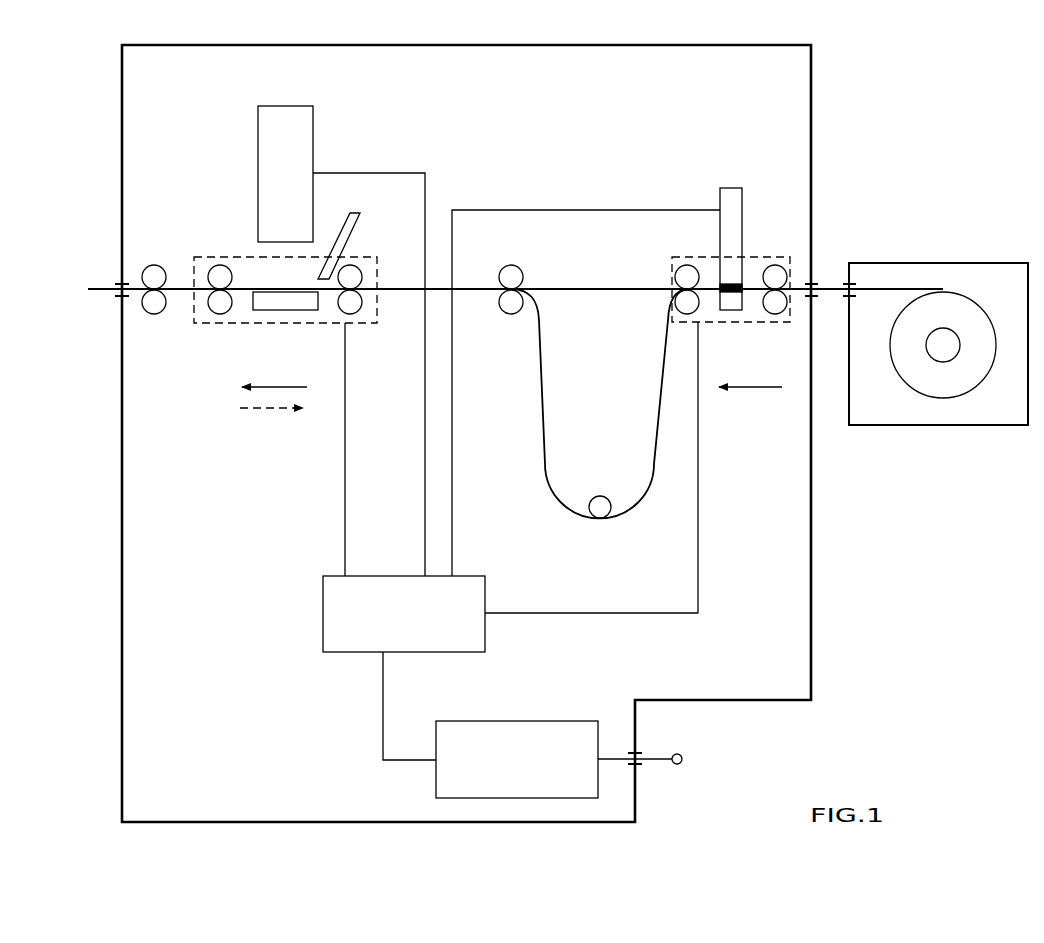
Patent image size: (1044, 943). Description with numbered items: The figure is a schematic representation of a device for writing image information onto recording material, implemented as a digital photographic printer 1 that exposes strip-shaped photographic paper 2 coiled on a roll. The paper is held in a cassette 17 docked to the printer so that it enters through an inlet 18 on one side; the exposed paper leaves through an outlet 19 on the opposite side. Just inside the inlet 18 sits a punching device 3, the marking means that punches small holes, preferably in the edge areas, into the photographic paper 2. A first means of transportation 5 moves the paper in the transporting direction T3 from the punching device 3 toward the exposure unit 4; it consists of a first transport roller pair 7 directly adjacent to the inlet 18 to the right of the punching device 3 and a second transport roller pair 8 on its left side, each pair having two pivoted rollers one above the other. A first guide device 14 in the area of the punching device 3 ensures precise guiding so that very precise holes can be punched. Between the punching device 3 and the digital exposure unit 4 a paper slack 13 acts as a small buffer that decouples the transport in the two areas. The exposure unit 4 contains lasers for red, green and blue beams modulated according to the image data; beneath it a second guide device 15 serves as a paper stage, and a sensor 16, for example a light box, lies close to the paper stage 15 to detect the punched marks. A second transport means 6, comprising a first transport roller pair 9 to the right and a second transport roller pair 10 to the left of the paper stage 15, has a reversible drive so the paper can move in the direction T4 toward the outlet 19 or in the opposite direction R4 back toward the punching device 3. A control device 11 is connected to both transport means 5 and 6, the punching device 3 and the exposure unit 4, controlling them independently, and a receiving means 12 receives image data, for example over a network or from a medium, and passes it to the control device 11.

The digital photographic printer 1 is at (812, 75).
The photographic paper 2 is at (178, 285).
The punching device 3 is at (735, 188).
The digital exposure unit 4 is at (313, 128).
The first means of transportation 5 is at (678, 322).
The second transport means 6 is at (232, 257).
The first transport roller pair 7 is at (780, 256).
The second transport roller pair 8 is at (670, 260).
The first transport roller pair 9 is at (374, 325).
The second transport roller pair 10 is at (208, 322).
The control device 11 is at (323, 626).
The receiving means 12 is at (535, 721).
The paper slack 13 is at (610, 523).
The first guide device 14 is at (733, 310).
The second guide device 15 is at (265, 310).
The sensor 16 is at (360, 228).
The cassette 17 is at (890, 425).
The inlet 18 is at (817, 284).
The outlet 19 is at (112, 282).
The transporting direction T3 is at (758, 390).
The direction T4 is at (285, 387).
The opposite direction R4 is at (258, 415).